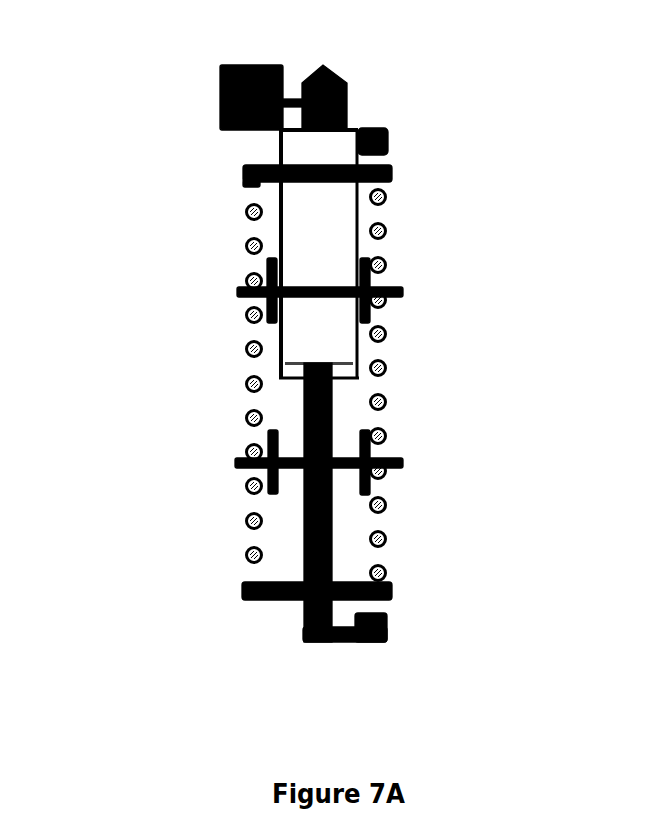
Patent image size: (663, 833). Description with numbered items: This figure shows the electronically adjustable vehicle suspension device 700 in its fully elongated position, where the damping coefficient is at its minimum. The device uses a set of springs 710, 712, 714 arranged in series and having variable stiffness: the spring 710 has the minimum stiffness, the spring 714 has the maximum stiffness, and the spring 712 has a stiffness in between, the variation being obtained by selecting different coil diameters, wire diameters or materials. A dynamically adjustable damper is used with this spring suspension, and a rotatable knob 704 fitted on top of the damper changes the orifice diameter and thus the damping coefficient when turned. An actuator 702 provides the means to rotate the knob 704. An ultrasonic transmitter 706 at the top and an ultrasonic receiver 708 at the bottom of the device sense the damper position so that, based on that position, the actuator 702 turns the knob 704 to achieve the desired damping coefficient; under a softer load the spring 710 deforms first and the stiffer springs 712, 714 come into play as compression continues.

The actuator assembly 700 is at (221, 668).
The actuator 702 is at (218, 106).
The rotatable knob 704 is at (293, 100).
The ultrasonic transmitter 706 is at (392, 135).
The ultrasonic receiver 708 is at (395, 623).
The spring 710 is at (390, 230).
The spring 712 is at (393, 372).
The spring 714 is at (398, 540).